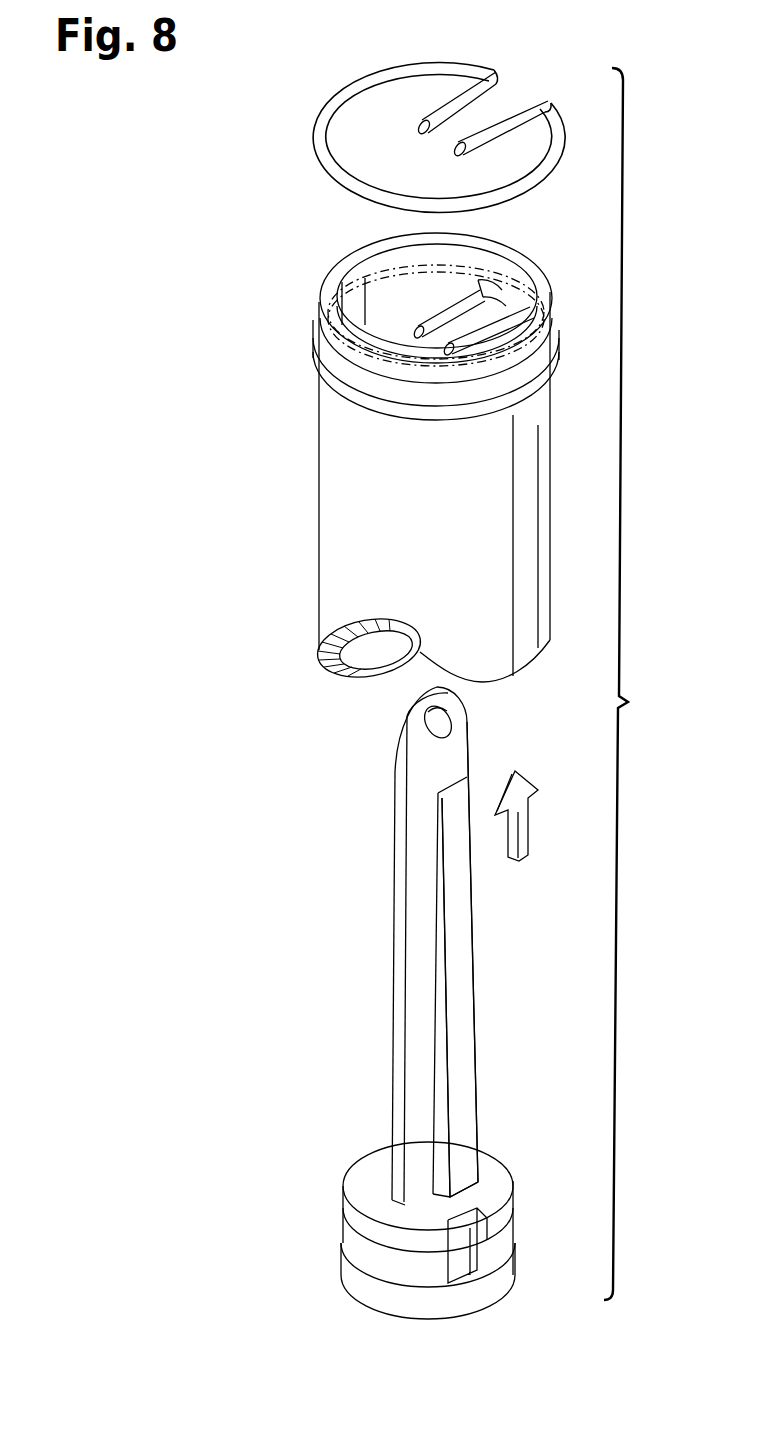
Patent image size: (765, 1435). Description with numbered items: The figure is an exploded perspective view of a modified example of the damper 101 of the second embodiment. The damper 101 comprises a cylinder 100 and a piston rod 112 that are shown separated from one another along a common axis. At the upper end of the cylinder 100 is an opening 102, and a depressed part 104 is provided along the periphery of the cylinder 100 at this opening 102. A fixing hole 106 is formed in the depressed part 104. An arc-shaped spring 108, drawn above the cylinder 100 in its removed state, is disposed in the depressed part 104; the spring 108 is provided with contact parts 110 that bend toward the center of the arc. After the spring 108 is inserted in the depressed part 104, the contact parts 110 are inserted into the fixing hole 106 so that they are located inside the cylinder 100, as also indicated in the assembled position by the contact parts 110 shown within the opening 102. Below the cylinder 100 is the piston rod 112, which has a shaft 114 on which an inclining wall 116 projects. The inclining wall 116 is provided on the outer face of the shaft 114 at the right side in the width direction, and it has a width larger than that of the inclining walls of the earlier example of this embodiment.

The cylinder 100 is at (530, 486).
The damper 101 is at (646, 684).
The opening 102 is at (495, 268).
The depressed part 104 is at (515, 383).
The fixing hole 106 is at (500, 302).
The arc-shaped spring 108 is at (324, 180).
The contact parts 110 is at (441, 134).
The piston rod 112 is at (487, 932).
The shaft 114 is at (453, 752).
The inclining wall 116 is at (465, 1076).